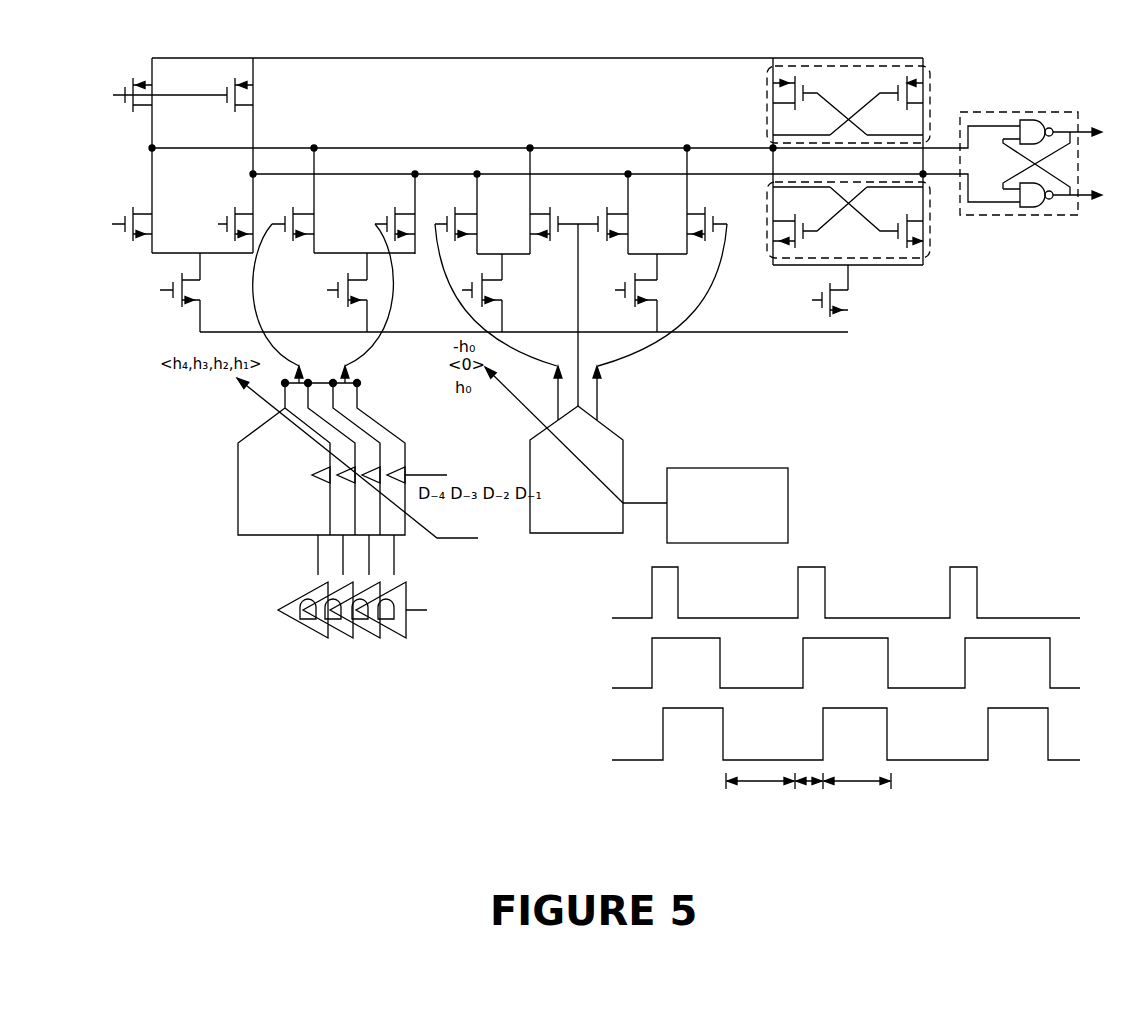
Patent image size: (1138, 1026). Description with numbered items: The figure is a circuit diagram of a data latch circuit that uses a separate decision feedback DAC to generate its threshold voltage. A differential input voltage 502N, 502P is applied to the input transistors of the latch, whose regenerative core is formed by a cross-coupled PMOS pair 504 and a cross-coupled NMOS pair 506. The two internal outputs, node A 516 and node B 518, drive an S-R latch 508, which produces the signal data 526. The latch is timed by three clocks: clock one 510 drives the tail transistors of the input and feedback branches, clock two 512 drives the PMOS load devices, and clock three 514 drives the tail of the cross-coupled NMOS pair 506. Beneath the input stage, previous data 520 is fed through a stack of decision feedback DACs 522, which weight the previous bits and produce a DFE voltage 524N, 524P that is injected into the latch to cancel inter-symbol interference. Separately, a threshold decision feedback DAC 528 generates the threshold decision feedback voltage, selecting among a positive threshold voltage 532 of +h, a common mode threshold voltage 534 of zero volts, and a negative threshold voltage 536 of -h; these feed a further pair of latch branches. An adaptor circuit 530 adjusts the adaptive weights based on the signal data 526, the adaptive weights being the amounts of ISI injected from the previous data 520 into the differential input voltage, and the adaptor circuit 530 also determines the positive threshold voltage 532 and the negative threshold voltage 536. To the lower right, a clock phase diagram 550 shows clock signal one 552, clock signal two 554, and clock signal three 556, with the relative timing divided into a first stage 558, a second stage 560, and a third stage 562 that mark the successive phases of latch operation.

The differential input voltage 502N is at (218, 224).
The differential input voltage 502P is at (112, 224).
The cross-coupled PMOS pair 504 is at (861, 70).
The cross-coupled NMOS pair 506 is at (930, 200).
The S-R latch 508 is at (1018, 215).
The clock 1 510 is at (327, 290).
The clock 2 512 is at (113, 95).
The clock 3 514 is at (812, 300).
The node A 516 is at (773, 148).
The node B 518 is at (924, 177).
The previous data 520 is at (440, 644).
The decision feedback DACs 522 is at (225, 407).
The DFE voltage 524N is at (368, 350).
The DFE voltage 524P is at (256, 276).
The signal data 526 is at (1072, 132).
The threshold decision feedback DAC 528 is at (625, 448).
The adaptor circuit 530 is at (790, 503).
The positive threshold voltage 532 is at (445, 272).
The common mode threshold voltage 534 is at (660, 347).
The negative threshold voltage 536 is at (578, 353).
The clock phase diagram 550 is at (866, 711).
The clock signal 1 552 is at (1068, 618).
The clock signal 2 554 is at (1068, 688).
The clock signal 3 556 is at (1068, 760).
The stage 1 558 is at (760, 783).
The stage 2 560 is at (809, 783).
The stage 3 562 is at (857, 783).